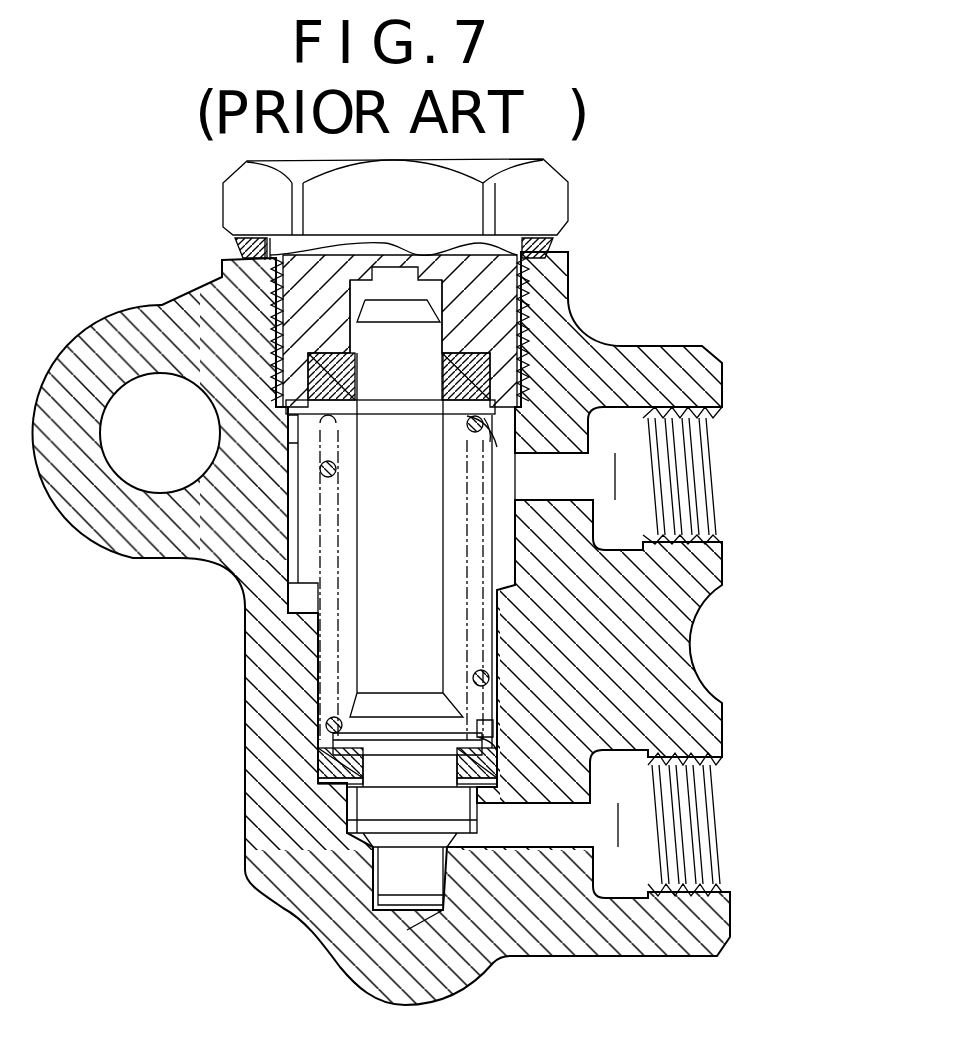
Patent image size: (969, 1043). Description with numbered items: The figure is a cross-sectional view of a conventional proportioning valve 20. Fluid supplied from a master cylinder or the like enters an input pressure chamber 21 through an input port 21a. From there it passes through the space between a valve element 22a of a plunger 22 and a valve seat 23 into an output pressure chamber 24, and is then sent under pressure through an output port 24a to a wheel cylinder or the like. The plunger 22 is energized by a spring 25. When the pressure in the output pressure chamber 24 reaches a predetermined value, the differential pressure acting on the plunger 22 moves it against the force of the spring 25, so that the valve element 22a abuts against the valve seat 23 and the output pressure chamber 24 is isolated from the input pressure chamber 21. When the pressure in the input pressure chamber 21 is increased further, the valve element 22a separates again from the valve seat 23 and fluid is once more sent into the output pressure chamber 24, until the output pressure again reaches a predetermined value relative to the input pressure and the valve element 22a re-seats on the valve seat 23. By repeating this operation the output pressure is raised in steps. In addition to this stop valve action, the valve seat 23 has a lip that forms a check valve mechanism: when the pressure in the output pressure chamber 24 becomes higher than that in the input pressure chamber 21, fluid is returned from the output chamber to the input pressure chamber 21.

The proportioning valve 20 is at (603, 290).
The input pressure chamber 21 is at (500, 535).
The input port 21a is at (702, 415).
The plunger 22 is at (433, 580).
The valve element 22a is at (363, 805).
The valve seat 23 is at (490, 750).
The output pressure chamber 24 is at (357, 823).
The output port 24a is at (703, 890).
The spring 25 is at (330, 502).